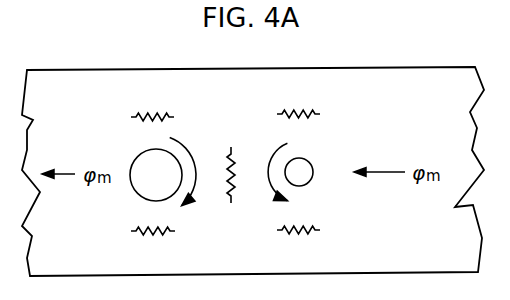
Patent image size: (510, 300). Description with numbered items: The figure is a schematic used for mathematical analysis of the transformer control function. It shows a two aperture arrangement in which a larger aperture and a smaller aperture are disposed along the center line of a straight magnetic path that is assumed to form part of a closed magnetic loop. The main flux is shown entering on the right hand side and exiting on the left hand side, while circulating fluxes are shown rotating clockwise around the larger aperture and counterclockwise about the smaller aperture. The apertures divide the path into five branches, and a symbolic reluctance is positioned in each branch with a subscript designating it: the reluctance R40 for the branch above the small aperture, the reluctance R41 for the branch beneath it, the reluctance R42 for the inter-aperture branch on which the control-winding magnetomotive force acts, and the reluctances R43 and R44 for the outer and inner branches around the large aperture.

The reluctance of core branch above the small aperture R40 is at (298, 100).
The reluctance of core branch beneath the small aperture R41 is at (298, 244).
The reluctance of inter-aperture branch R42 is at (229, 162).
The reluctance of outer core branch around the large aperture R43 is at (152, 102).
The reluctance of inner core branch around the large aperture R44 is at (153, 245).